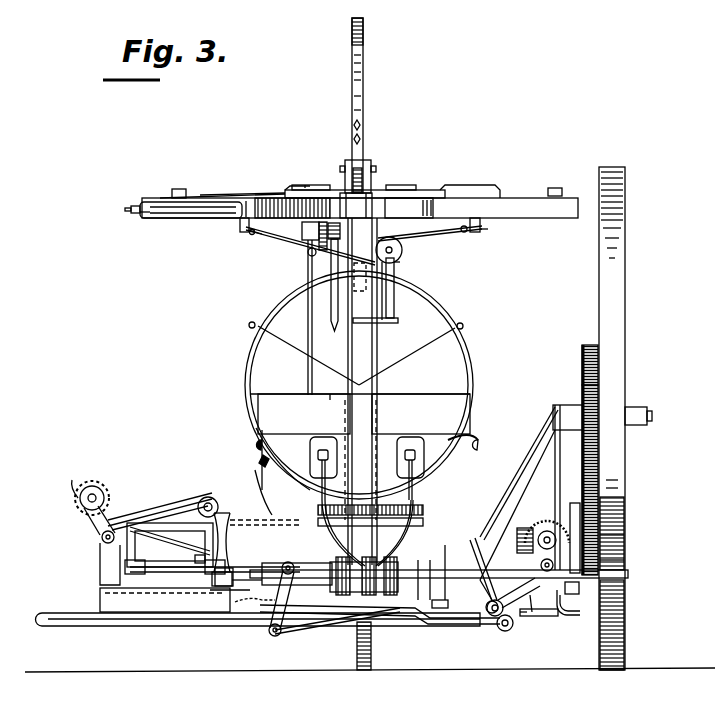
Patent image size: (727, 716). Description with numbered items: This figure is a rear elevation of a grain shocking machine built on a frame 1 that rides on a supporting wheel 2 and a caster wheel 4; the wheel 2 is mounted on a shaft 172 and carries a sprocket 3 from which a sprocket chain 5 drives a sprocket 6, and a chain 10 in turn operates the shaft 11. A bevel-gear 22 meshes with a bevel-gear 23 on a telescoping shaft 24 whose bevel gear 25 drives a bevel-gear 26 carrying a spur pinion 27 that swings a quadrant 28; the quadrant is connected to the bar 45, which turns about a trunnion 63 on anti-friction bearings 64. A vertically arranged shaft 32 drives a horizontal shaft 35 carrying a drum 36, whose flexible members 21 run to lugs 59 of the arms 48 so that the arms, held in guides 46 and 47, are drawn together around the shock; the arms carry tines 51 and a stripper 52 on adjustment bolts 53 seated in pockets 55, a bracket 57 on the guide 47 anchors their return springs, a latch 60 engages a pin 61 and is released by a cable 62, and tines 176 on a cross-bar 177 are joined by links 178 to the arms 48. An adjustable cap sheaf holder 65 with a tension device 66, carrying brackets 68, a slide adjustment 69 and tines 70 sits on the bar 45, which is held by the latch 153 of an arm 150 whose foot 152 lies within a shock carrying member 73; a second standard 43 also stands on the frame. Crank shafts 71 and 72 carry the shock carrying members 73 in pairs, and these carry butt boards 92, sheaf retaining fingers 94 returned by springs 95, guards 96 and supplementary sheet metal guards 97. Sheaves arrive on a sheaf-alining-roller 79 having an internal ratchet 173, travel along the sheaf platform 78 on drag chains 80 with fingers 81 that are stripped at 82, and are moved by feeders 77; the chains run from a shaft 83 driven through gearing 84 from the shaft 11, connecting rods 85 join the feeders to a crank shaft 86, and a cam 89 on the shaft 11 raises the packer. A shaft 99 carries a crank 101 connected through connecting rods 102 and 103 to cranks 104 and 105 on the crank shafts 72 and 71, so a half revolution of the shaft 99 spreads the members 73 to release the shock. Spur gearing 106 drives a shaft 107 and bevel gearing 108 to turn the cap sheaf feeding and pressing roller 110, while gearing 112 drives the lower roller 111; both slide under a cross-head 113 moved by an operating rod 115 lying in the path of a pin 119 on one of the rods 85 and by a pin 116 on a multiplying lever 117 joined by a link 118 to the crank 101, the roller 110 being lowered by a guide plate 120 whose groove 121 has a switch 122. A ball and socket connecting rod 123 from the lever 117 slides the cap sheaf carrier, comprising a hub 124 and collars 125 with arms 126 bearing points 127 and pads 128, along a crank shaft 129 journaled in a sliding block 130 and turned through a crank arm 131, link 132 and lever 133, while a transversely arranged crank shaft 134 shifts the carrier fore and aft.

The frame 1 is at (128, 604).
The supporting wheel 2 is at (625, 635).
The sprocket 3 is at (590, 345).
The caster wheel 4 is at (358, 670).
The sprocket chain 5 is at (622, 468).
The sprocket 6 is at (625, 593).
The chain 10 is at (614, 520).
The shaft 11 is at (172, 568).
The flexible members 21 is at (296, 242).
The bevel-gear 22 is at (310, 630).
The bevel-gear 23 is at (258, 522).
The telescoping shaft 24 is at (307, 339).
The bevel gear 25 is at (310, 240).
The bevel-gear 26 is at (322, 250).
The spur pinion 27 is at (312, 256).
The quadrant 28 is at (333, 335).
The vertically arranged shaft 32 is at (378, 354).
The horizontal shaft 35 is at (398, 264).
The drum 36 is at (404, 256).
The second standard 43 is at (413, 381).
The bar 45 is at (356, 205).
The guide 46 is at (262, 234).
The guide 47 is at (196, 198).
The arms 48 is at (175, 218).
The tines 51 is at (245, 212).
The stripper 52 is at (256, 200).
The adjustment bolts 53 is at (124, 208).
The pockets 55 is at (148, 214).
The bracket 57 is at (171, 192).
The lugs 59 is at (242, 232).
The latch 60 is at (312, 186).
The pin 61 is at (441, 190).
The cord or cable 62 is at (395, 312).
The trunnion 63 is at (395, 214).
The anti-friction bearings 64 is at (440, 234).
The adjustable cap sheaf holder 65 is at (364, 86).
The tension device 66 is at (362, 176).
The carrying brackets 68 is at (366, 160).
The slide adjustment 69 is at (362, 126).
The tines 70 is at (364, 36).
The crank shaft 71 is at (262, 557).
The crank shaft 72 is at (420, 452).
The shock carrying members 73 is at (246, 392).
The feeders 77 is at (240, 526).
The sheaf platform 78 is at (163, 506).
The sheaf-alining-roller 79 is at (96, 482).
The drag chains 80 is at (137, 515).
The fingers 81 is at (208, 496).
The outwardly extended portion of sheaf platform 82 is at (236, 520).
The shaft 83 is at (226, 512).
The gearing 84 is at (197, 556).
The connecting rods 85 is at (222, 590).
The crank shaft 86 is at (490, 613).
The cam 89 is at (440, 608).
The butt boards 92 is at (330, 393).
The sheaf retaining finger 94 is at (375, 468).
The springs 95 is at (290, 458).
The guards 96 is at (385, 500).
The supplementary sheet metal guards 97 is at (266, 480).
The shaft 99 is at (555, 612).
The crank 101 is at (555, 616).
The connecting rod 102 is at (525, 616).
The connecting rod 103 is at (288, 634).
The crank 104 is at (428, 605).
The crank 105 is at (262, 604).
The spur gearing 106 is at (625, 545).
The shaft 107 is at (575, 503).
The bevel gearing 108 is at (547, 520).
The cap sheaf feeding and pressing roller 110 is at (395, 500).
The roller 111 is at (358, 528).
The gearing 112 is at (524, 528).
The cross-head 113 is at (418, 605).
The operating rod 115 is at (245, 583).
The pin 116 is at (450, 605).
The multiplying lever 117 is at (488, 604).
The link 118 is at (531, 612).
The pin 119 is at (240, 592).
The guide plate 120 is at (462, 478).
The groove 121 is at (378, 445).
The switch 122 is at (482, 470).
The ball and socket connecting rod 123 is at (388, 618).
The hub 124 is at (356, 596).
The collars 125 is at (340, 590).
The arms 126 is at (272, 440).
The points 127 is at (270, 450).
The pads 128 is at (323, 437).
The crank shaft 129 is at (628, 574).
The sliding block 130 is at (582, 601).
The crank arm 131 is at (625, 560).
The link 132 is at (602, 516).
The lever 133 is at (594, 500).
The transversely arranged crank shaft 134 is at (580, 612).
The arm 150 is at (395, 300).
The foot 152 is at (398, 323).
The latch 153 is at (395, 190).
The shaft 172 is at (72, 626).
The internal ratchet 173 is at (76, 498).
The tines 176 is at (310, 186).
The cross-bar 177 is at (226, 196).
The links 178 is at (304, 186).